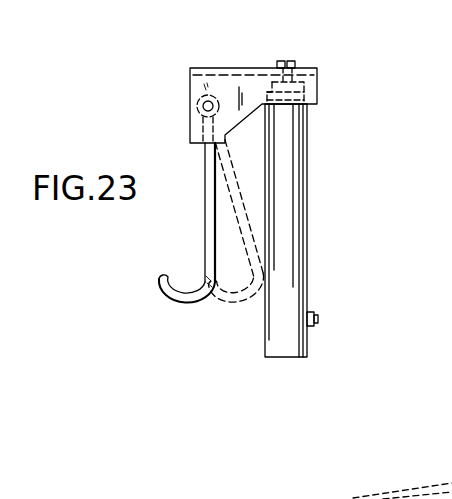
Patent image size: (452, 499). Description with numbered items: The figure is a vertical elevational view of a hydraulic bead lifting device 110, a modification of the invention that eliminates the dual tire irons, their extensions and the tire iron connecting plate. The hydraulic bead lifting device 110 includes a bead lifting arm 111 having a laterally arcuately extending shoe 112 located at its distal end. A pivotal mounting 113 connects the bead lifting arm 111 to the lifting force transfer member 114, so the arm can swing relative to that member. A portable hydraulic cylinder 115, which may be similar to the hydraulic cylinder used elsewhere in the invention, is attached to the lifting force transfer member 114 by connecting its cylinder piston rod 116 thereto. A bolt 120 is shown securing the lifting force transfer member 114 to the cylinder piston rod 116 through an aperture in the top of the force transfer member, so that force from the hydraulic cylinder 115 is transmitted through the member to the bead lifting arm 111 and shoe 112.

The hydraulic bead lifting device 110 is at (337, 100).
The bead lifting arm 111 is at (212, 227).
The shoe 112 is at (176, 298).
The pivotal mounting 113 is at (203, 107).
The lifting force transfer member 114 is at (252, 68).
The portable hydraulic cylinder 115 is at (297, 223).
The cylinder piston rod 116 is at (305, 90).
The bolt 120 is at (293, 61).